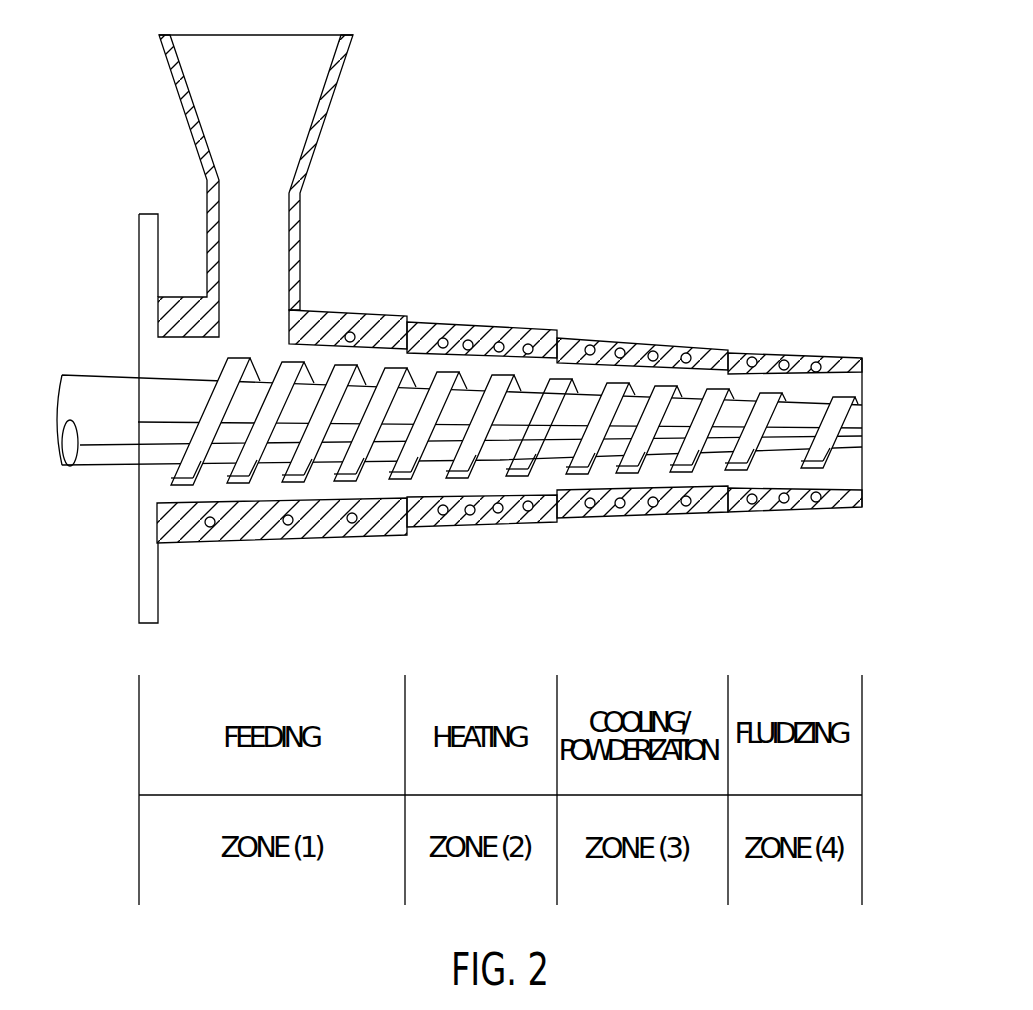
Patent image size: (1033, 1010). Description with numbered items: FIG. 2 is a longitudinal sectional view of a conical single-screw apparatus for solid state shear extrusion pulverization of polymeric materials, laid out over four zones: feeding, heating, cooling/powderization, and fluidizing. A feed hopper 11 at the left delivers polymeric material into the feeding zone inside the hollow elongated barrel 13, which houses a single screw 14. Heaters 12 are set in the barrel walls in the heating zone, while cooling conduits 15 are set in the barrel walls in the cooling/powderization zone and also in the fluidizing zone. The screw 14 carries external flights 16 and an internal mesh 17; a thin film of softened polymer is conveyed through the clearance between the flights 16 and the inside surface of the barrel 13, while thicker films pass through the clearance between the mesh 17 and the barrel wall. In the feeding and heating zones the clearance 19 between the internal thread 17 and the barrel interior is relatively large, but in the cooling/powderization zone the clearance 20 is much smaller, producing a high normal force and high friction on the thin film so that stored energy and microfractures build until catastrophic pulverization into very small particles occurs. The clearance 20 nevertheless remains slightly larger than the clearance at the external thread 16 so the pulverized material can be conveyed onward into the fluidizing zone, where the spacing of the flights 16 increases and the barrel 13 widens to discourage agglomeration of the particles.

The feed hopper 11 is at (328, 110).
The heaters 12 is at (455, 327).
The hollow elongated barrel 13 is at (837, 357).
The single screw 14 is at (422, 462).
The cooling conduits 15 is at (760, 512).
The flights 16 is at (563, 379).
The mesh 17 is at (375, 478).
The clearance 19 is at (482, 480).
The clearance 20 is at (543, 483).